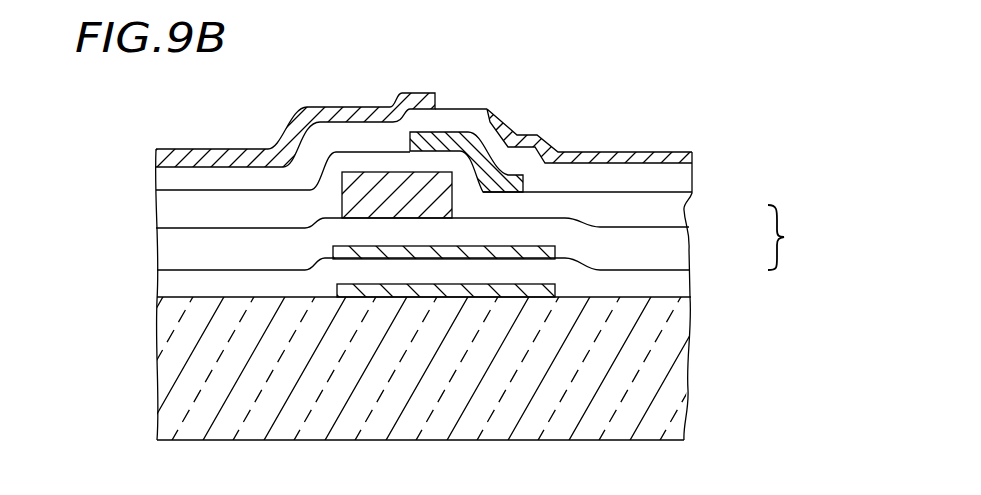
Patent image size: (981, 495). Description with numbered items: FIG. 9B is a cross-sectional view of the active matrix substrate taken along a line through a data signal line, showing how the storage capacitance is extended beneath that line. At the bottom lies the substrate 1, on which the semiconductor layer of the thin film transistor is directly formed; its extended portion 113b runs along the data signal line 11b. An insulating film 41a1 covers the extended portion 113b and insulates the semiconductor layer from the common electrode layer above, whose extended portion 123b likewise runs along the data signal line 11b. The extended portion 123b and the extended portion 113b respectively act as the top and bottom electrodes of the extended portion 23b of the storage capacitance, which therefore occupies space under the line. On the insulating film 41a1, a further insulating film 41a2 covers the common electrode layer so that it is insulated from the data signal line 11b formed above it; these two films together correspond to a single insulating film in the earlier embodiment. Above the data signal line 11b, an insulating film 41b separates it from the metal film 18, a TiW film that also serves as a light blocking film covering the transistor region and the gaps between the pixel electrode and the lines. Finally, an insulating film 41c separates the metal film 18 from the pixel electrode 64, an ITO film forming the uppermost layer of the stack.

The substrate 1 is at (665, 352).
The insulating film 41a1 is at (174, 281).
The insulating film 41a2 is at (178, 247).
The insulating film 41b is at (172, 218).
The insulating film 41c is at (165, 183).
The data signal line 11b is at (357, 177).
The pixel electrode 64 is at (497, 116).
The metal film 18 is at (517, 175).
The extended portion of the common electrode layer 123b is at (557, 247).
The extended portion of the semiconductor layer 113b is at (557, 285).
The extended portion of the storage capacitance 23b is at (800, 237).